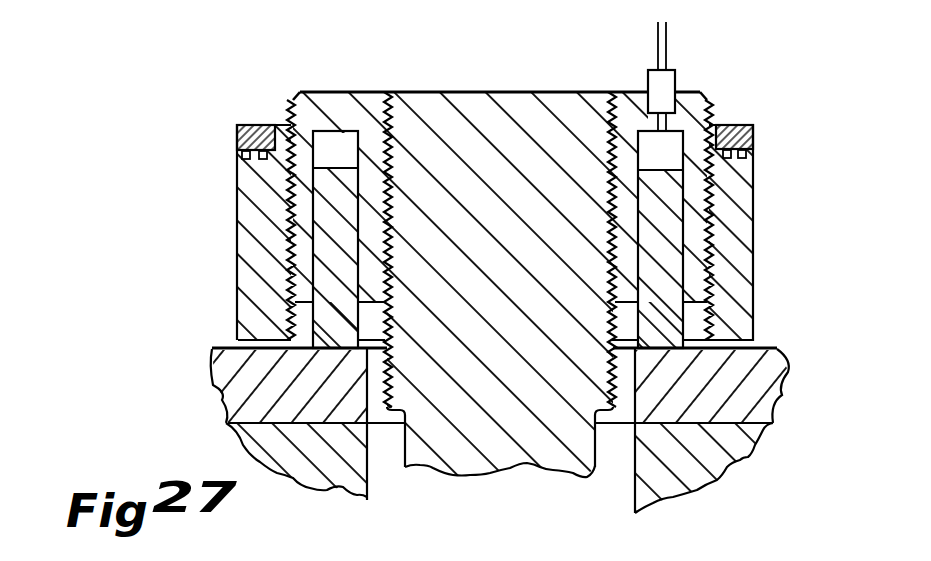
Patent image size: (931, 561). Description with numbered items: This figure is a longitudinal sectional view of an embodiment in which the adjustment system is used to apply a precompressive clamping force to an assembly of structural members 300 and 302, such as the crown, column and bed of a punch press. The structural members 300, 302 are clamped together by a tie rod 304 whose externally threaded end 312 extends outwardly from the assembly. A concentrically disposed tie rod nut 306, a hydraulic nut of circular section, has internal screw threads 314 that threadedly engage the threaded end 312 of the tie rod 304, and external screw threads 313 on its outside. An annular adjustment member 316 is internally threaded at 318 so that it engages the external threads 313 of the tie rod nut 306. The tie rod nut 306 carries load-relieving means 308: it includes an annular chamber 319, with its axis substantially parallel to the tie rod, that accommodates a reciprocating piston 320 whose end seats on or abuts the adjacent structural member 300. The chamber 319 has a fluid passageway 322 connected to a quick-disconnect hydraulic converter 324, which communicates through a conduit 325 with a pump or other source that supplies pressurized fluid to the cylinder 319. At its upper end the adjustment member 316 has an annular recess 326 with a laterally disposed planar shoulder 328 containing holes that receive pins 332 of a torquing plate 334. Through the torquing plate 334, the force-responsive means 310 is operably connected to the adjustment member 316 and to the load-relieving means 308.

The structural member 300 is at (218, 393).
The structural member 302 is at (238, 445).
The tie rod 304 is at (455, 477).
The tie rod nut 306 is at (478, 289).
The load-relieving means 308 is at (290, 98).
The force-responsive means 310 is at (182, 93).
The externally threaded end 312 is at (614, 404).
The external screw threads 313 is at (290, 99).
The internal screw threads 314 is at (393, 122).
The annular adjustment member 316 is at (240, 256).
The internal threads of adjustment member 318 is at (290, 320).
The annular chamber 319 is at (350, 163).
The reciprocating piston 320 is at (322, 286).
The fluid passageway 322 is at (613, 92).
The quick-disconnect hydraulic converter 324 is at (655, 120).
The conduit 325 is at (657, 55).
The annular recess 326 is at (250, 150).
The planar shoulder 328 is at (740, 127).
The pins 332 is at (252, 162).
The torquing plate 334 is at (237, 125).